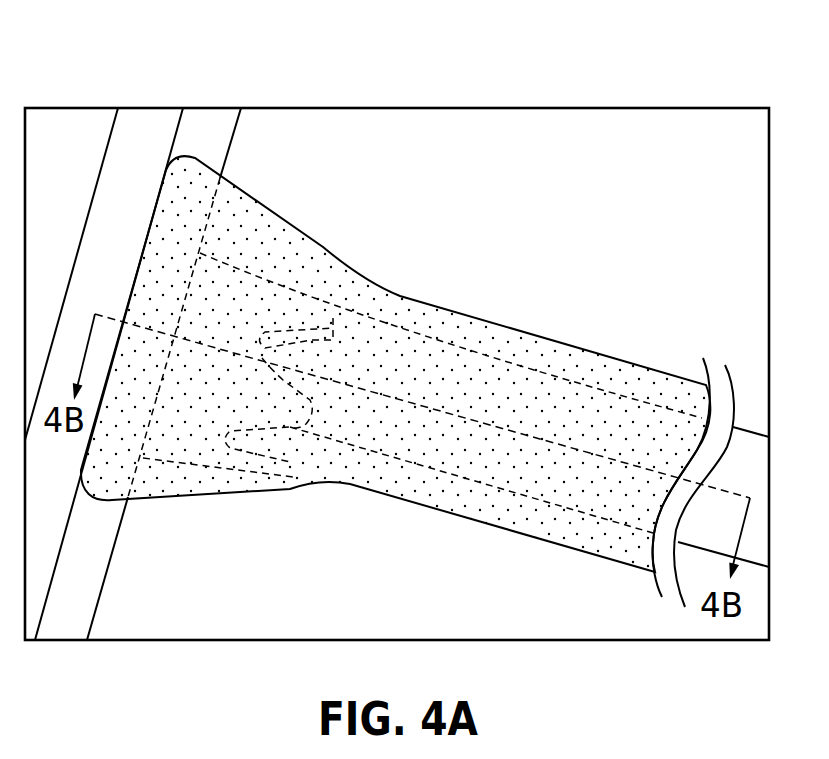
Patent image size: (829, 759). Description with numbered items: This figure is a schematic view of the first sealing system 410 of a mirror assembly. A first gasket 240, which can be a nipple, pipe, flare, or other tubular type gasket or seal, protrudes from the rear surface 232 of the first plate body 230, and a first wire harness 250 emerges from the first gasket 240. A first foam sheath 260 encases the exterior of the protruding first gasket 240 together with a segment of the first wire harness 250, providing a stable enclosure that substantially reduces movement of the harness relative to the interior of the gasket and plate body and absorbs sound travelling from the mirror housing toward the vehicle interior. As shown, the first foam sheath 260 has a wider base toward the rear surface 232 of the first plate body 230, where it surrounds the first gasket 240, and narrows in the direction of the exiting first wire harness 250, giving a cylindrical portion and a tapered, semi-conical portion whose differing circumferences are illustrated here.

The first plate body 230 is at (166, 126).
The rear surface 232 is at (196, 133).
The first gasket 240 is at (196, 425).
The first wire harness 250 is at (441, 450).
The first foam sheath 260 is at (510, 332).
The first sealing system 410 is at (522, 108).